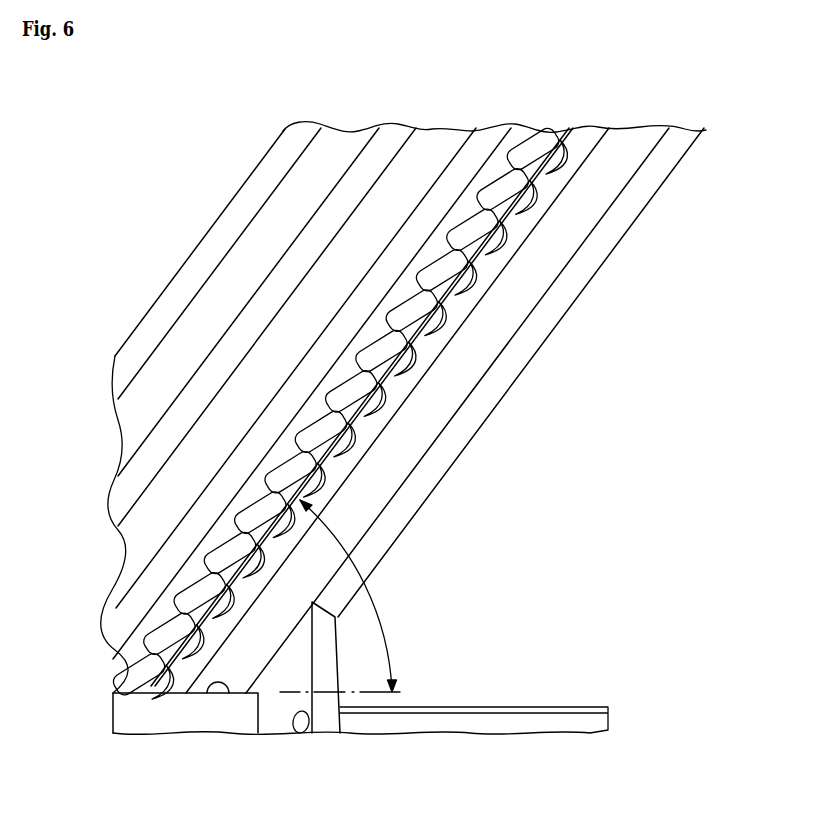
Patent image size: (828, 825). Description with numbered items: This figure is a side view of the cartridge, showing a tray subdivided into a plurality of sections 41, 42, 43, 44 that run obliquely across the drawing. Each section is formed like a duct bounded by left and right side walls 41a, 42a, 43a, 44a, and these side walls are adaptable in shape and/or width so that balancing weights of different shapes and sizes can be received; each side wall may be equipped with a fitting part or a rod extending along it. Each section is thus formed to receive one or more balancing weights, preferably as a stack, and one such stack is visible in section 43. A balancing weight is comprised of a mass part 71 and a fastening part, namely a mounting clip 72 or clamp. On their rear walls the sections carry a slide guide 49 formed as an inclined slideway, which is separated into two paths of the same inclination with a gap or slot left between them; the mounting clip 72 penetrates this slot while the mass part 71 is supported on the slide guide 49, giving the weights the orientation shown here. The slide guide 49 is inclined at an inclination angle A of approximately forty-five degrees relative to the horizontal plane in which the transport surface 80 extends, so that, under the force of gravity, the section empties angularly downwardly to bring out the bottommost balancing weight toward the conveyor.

The section 41 is at (337, 140).
The side wall 41a is at (352, 142).
The section 42 is at (433, 140).
The side wall 42a is at (448, 142).
The section 43 is at (523, 140).
The side wall 43a is at (555, 140).
The section 44 is at (625, 140).
The side wall 44a is at (643, 140).
The slide guide 49 is at (532, 180).
The mass part 71 is at (467, 230).
The mounting clip 72 is at (522, 213).
The transport surface 80 is at (226, 698).
The inclination angle A is at (378, 607).